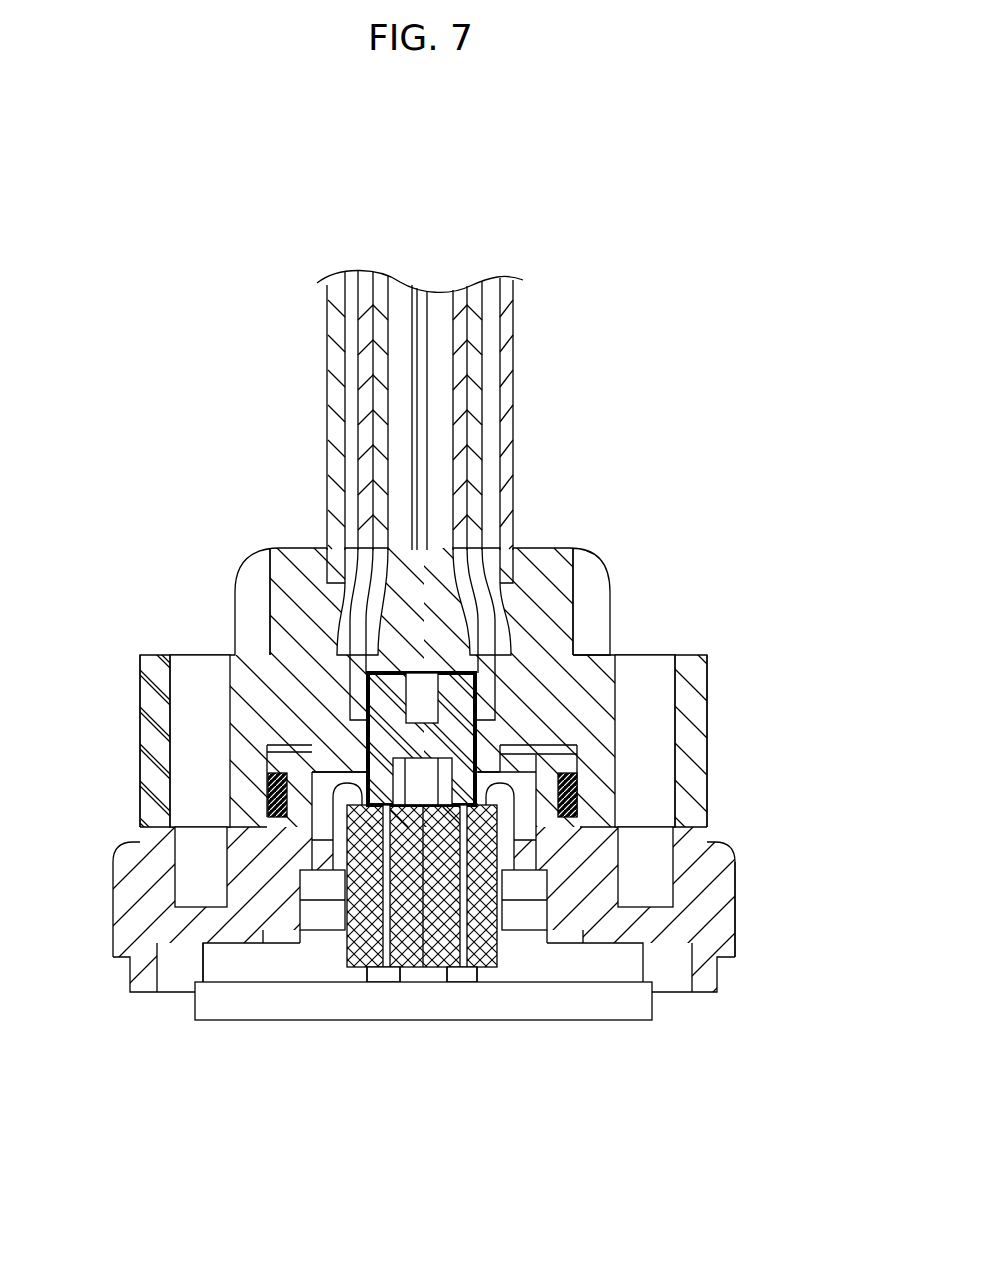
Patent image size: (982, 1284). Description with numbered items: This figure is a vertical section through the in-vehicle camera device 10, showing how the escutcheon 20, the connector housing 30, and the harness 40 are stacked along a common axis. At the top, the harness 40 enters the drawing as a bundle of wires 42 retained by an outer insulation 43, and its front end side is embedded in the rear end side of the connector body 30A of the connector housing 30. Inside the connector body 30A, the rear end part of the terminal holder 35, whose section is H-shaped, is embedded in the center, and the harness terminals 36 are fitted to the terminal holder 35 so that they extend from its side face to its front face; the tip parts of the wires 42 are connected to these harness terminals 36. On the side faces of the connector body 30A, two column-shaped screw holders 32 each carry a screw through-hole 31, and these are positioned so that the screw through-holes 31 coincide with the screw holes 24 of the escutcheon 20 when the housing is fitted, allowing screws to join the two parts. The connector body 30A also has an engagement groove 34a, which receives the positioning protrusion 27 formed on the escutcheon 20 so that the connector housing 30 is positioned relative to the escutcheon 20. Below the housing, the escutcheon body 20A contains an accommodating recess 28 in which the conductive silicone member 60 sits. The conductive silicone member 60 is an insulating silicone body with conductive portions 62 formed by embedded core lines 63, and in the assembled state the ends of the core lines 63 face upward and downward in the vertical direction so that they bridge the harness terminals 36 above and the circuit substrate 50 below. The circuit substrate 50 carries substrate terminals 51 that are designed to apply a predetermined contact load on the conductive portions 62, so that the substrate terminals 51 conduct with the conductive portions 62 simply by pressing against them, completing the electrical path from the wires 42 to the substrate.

The in-vehicle camera device 10 is at (112, 407).
The escutcheon 20 is at (437, 754).
The escutcheon body 20A is at (740, 916).
The screw hole 24 is at (190, 832).
The positioning protrusion 27 is at (572, 745).
The accommodating recess 28 is at (345, 885).
The connector housing 30 is at (439, 625).
The connector body 30A is at (533, 570).
The screw through-hole 31 is at (180, 716).
The screw holder 32 is at (140, 774).
The engagement groove 34a is at (562, 745).
The terminal holder 35 is at (368, 765).
The harness terminal 36 is at (384, 746).
The harness 40 is at (435, 404).
The wire 42 is at (384, 292).
The outer insulation 43 is at (327, 340).
The circuit substrate 50 is at (490, 1040).
The substrate terminal 51 is at (462, 985).
The conductive silicone member 60 is at (309, 959).
The conductive portion 62 is at (353, 948).
The core line 63 is at (352, 985).